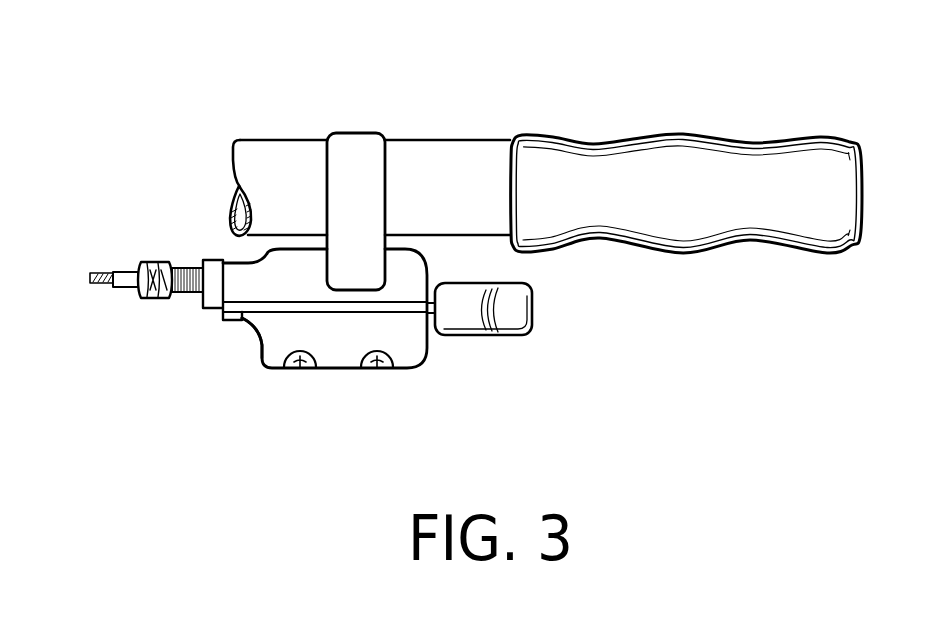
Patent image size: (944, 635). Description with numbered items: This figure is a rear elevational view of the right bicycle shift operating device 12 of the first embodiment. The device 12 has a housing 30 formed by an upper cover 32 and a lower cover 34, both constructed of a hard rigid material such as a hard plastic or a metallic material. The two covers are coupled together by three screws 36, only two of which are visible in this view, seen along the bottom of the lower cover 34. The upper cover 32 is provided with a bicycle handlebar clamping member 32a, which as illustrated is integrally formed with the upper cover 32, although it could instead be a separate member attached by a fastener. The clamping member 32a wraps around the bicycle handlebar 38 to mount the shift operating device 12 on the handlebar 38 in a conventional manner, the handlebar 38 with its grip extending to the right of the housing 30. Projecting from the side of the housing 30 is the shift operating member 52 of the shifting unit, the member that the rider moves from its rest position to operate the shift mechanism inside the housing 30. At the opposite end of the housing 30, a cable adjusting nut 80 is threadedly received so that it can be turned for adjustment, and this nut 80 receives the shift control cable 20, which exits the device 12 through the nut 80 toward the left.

The bicycle shift operating device 12 is at (197, 252).
The shift control cable 20 is at (125, 270).
The cable adjusting nut 80 is at (146, 300).
The housing 30 is at (150, 385).
The upper cover 32 is at (263, 283).
The bicycle handlebar clamping member 32a is at (367, 145).
The lower cover 34 is at (275, 345).
The screws 36 is at (298, 368).
The bicycle handlebar 38 is at (465, 142).
The shift operating member 52 is at (505, 337).